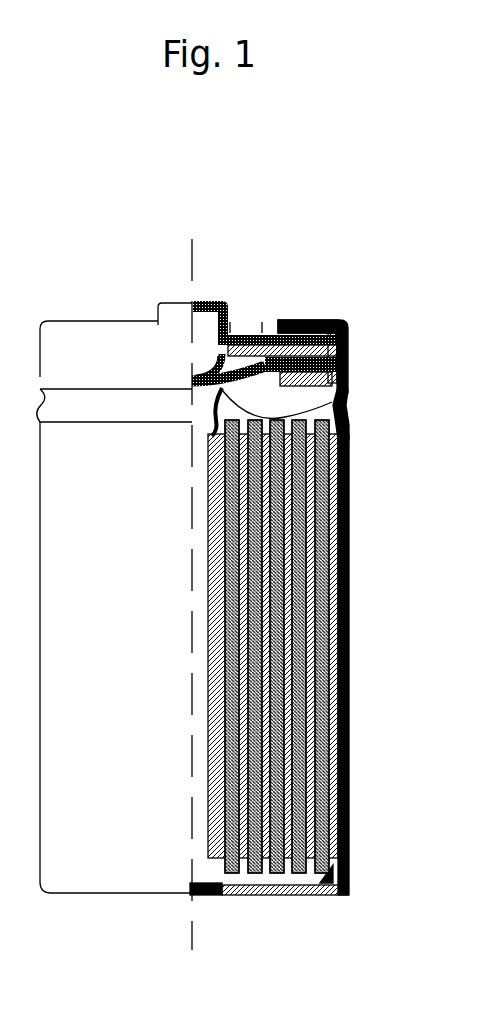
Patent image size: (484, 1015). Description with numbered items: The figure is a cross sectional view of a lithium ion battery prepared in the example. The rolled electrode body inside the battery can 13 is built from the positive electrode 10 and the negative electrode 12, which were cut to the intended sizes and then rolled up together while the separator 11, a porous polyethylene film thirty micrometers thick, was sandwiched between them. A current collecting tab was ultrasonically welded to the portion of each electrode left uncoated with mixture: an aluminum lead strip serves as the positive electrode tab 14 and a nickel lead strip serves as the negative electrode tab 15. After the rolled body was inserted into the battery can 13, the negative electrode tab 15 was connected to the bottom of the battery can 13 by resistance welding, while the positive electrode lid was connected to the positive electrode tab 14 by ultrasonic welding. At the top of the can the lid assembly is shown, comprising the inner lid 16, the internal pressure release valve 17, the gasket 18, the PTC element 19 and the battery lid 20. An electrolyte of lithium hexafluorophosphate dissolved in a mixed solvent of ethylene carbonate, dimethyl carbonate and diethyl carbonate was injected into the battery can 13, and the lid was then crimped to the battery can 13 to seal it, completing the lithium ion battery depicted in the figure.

The positive electrode 10 is at (220, 883).
The separator 11 is at (218, 884).
The negative electrode 12 is at (237, 863).
The battery can 13 is at (348, 671).
The positive electrode tab 14 is at (340, 403).
The negative electrode tab 15 is at (343, 888).
The inner lid 16 is at (353, 368).
The internal pressure release valve 17 is at (205, 363).
The gasket 18 is at (350, 344).
The PTC element 19 is at (307, 320).
The battery lid 20 is at (262, 330).